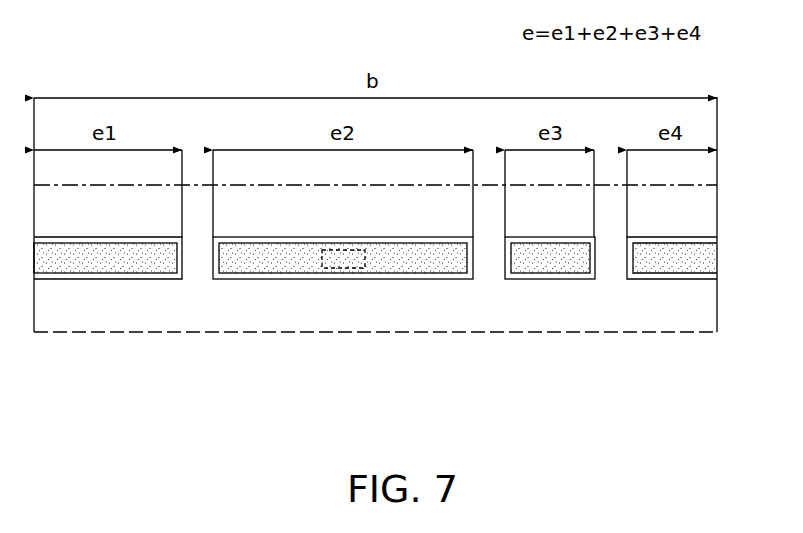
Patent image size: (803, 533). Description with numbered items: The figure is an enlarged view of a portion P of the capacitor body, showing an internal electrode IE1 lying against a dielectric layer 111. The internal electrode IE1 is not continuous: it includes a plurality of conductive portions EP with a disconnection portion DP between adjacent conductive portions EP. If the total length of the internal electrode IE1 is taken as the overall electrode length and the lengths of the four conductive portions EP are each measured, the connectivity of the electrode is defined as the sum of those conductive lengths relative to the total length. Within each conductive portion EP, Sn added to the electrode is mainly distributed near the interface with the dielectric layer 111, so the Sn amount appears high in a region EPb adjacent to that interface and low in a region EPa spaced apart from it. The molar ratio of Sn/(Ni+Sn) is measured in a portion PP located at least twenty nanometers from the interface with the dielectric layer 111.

The dielectric layer 111 is at (694, 306).
The portion P is at (407, 272).
The portion PP is at (333, 279).
The internal electrode IE1 is at (123, 299).
The conductive portion EP is at (108, 322).
The region spaced apart from the interface EPa is at (67, 258).
The region adjacent to the interface EPb is at (130, 278).
The disconnection portion DP is at (195, 258).